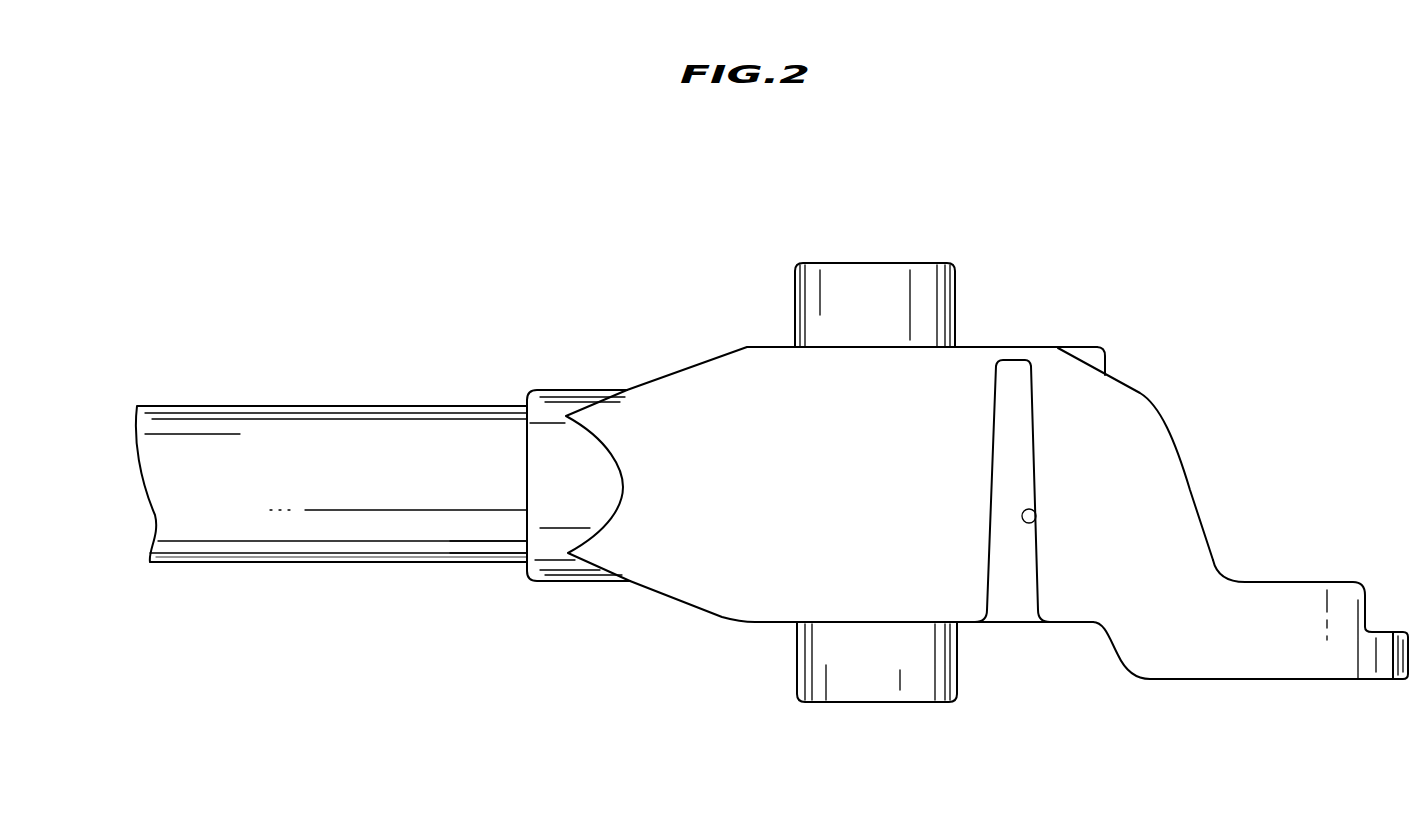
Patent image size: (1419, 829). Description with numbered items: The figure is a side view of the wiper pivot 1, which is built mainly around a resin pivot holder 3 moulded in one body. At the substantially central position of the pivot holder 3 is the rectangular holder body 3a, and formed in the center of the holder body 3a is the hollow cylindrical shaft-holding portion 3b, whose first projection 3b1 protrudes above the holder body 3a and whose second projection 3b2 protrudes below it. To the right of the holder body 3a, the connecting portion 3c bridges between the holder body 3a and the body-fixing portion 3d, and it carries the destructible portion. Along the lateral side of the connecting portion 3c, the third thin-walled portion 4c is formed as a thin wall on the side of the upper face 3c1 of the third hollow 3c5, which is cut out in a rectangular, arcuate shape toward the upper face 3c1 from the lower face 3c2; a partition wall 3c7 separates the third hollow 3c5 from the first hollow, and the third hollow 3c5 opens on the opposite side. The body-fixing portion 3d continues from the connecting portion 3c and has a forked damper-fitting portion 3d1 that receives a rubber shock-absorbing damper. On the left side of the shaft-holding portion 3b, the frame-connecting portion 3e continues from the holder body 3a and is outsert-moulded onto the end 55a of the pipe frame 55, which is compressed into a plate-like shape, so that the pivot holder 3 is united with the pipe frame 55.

The wiper pivot 1 is at (1148, 138).
The pipe frame 55 is at (209, 407).
The end of the pipe frame 55a is at (513, 540).
The frame-connecting portion 3e is at (582, 388).
The holder body 3a is at (747, 570).
The pivot holder 3 is at (920, 625).
The shaft-holding portion 3b is at (795, 300).
The first projection 3b1 is at (923, 307).
The second projection 3b2 is at (818, 675).
The upper face of the connecting portion 3c1 is at (1000, 345).
The third thin-walled portion 4c is at (1015, 353).
The partition wall 3c7 is at (1015, 463).
The third hollow 3c5 is at (1029, 509).
The connecting portion 3c is at (997, 625).
The lower face of the connecting portion 3c2 is at (1033, 625).
The body-fixing portion 3d is at (1285, 582).
The damper-fitting portion 3d1 is at (1285, 655).